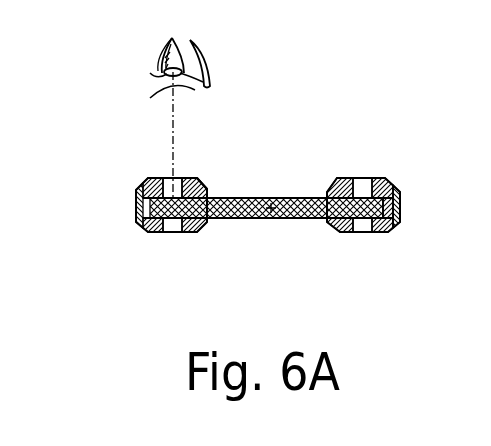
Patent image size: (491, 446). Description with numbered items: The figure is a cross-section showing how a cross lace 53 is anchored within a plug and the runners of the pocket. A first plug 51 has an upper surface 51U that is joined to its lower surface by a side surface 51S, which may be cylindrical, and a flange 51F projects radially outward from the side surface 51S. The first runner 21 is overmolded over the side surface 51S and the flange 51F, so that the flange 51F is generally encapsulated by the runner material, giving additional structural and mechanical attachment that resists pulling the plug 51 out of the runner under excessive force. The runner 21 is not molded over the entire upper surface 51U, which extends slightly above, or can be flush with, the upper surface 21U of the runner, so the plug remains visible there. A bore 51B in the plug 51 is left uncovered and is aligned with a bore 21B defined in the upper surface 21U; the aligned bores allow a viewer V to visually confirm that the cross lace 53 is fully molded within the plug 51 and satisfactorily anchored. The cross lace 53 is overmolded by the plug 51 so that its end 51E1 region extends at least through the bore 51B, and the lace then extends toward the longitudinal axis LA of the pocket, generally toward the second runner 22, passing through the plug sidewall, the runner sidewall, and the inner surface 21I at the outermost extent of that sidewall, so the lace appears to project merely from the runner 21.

The first plug 51 is at (168, 214).
The upper surface 51U is at (150, 180).
The bore 51B is at (168, 180).
The flange 51F is at (140, 210).
The side surface 51S is at (198, 195).
The first end of connector body 51E1 is at (184, 218).
The first runner 21 is at (188, 209).
The bore 21B is at (197, 184).
The upper surface 21U is at (198, 190).
The inner surface 21I is at (208, 228).
The second runner 22 is at (362, 178).
The cross lace 53 is at (251, 218).
The longitudinal axis LA is at (270, 208).
The viewer V is at (203, 61).